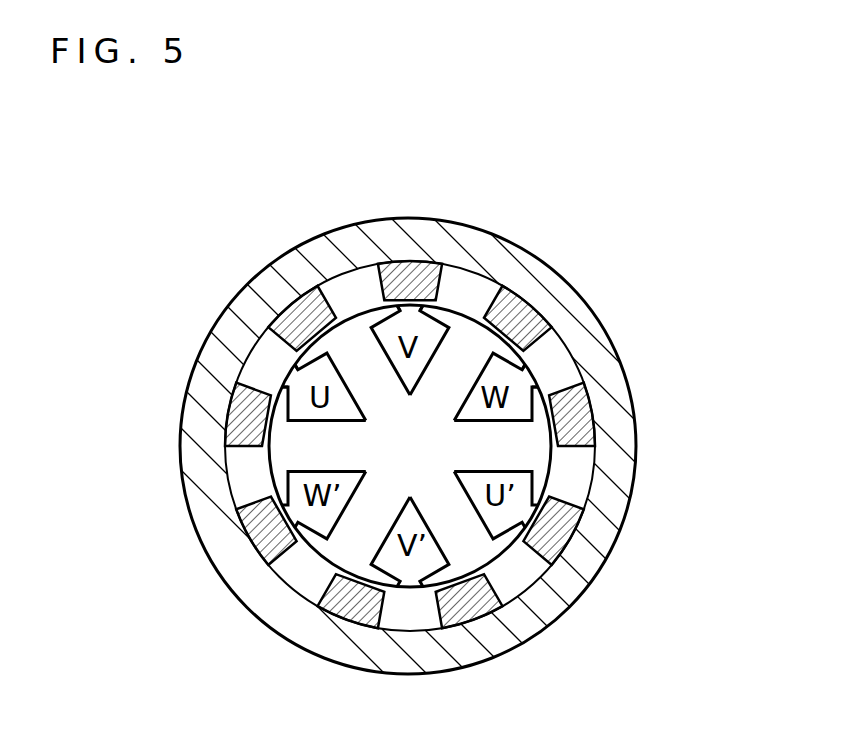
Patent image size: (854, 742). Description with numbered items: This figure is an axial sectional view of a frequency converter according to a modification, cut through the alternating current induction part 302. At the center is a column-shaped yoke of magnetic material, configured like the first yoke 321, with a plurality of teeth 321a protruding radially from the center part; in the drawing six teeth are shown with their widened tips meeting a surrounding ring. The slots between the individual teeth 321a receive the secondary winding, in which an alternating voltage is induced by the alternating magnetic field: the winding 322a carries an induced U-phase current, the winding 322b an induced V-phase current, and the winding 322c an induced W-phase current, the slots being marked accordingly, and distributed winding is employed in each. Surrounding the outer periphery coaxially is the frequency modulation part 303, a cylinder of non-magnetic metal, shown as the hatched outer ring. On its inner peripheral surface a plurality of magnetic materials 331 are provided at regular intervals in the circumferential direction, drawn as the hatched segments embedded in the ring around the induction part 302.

The alternating current induction part 302 is at (526, 358).
The frequency modulation part 303 is at (462, 222).
The first yoke 321 is at (458, 445).
The teeth 321a is at (458, 533).
The winding 322a is at (300, 383).
The winding 322b is at (385, 330).
The winding 322c is at (483, 360).
The magnetic materials 331 is at (513, 308).